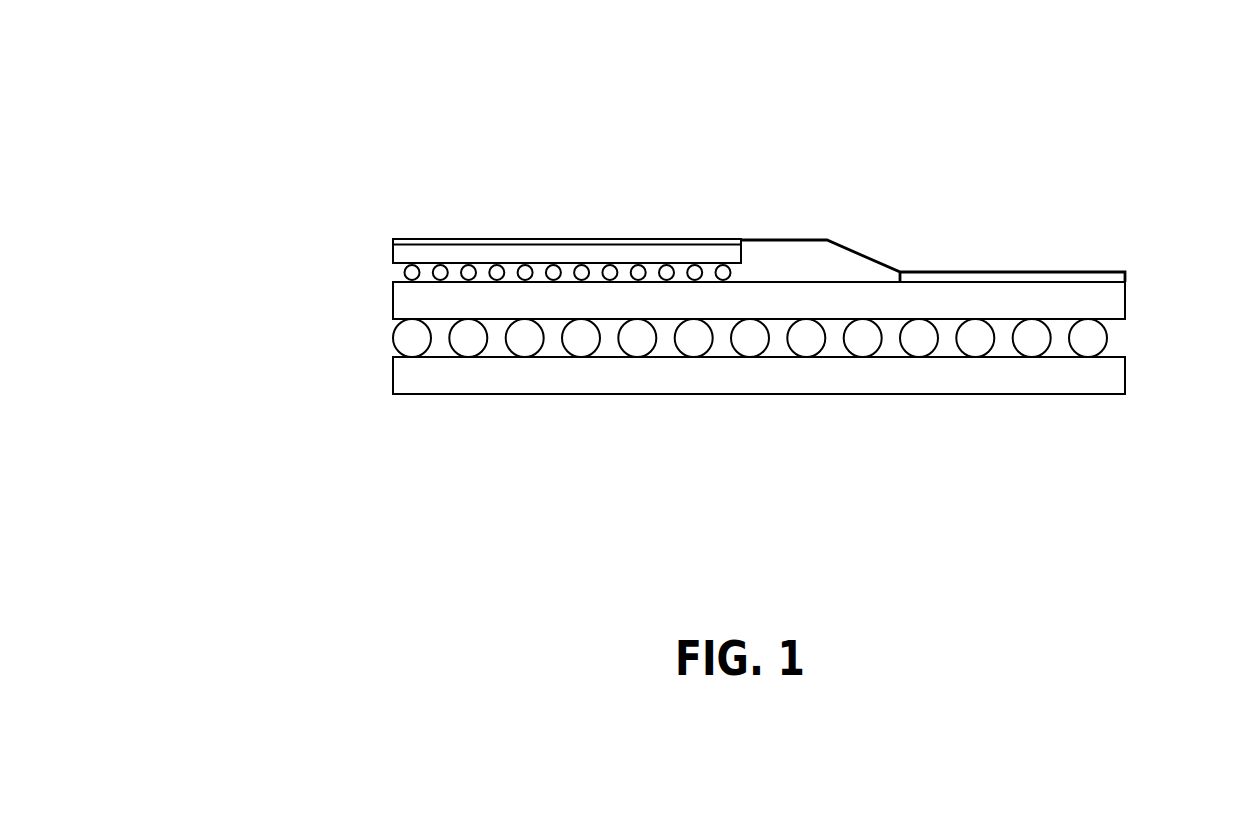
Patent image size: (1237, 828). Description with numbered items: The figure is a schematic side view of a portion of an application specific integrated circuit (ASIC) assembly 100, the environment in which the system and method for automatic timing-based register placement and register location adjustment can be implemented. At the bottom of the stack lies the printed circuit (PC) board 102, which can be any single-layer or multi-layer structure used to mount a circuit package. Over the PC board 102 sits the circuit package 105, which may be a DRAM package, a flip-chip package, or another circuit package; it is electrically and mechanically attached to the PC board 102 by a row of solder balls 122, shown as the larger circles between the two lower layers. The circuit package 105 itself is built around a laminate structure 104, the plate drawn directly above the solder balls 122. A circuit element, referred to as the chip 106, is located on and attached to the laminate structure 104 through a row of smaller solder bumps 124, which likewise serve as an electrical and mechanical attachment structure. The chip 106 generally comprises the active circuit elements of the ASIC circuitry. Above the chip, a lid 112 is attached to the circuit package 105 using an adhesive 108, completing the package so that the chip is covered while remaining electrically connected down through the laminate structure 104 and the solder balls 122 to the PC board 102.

The application specific integrated circuit (ASIC) assembly 100 is at (328, 96).
The printed circuit (PC) board 102 is at (1112, 387).
The laminate structure 104 is at (1107, 309).
The circuit package 105 is at (358, 237).
The chip 106 is at (743, 255).
The adhesive 108 is at (393, 243).
The lid 112 is at (632, 238).
The solder balls 122 is at (1145, 338).
The solder bumps 124 is at (740, 273).